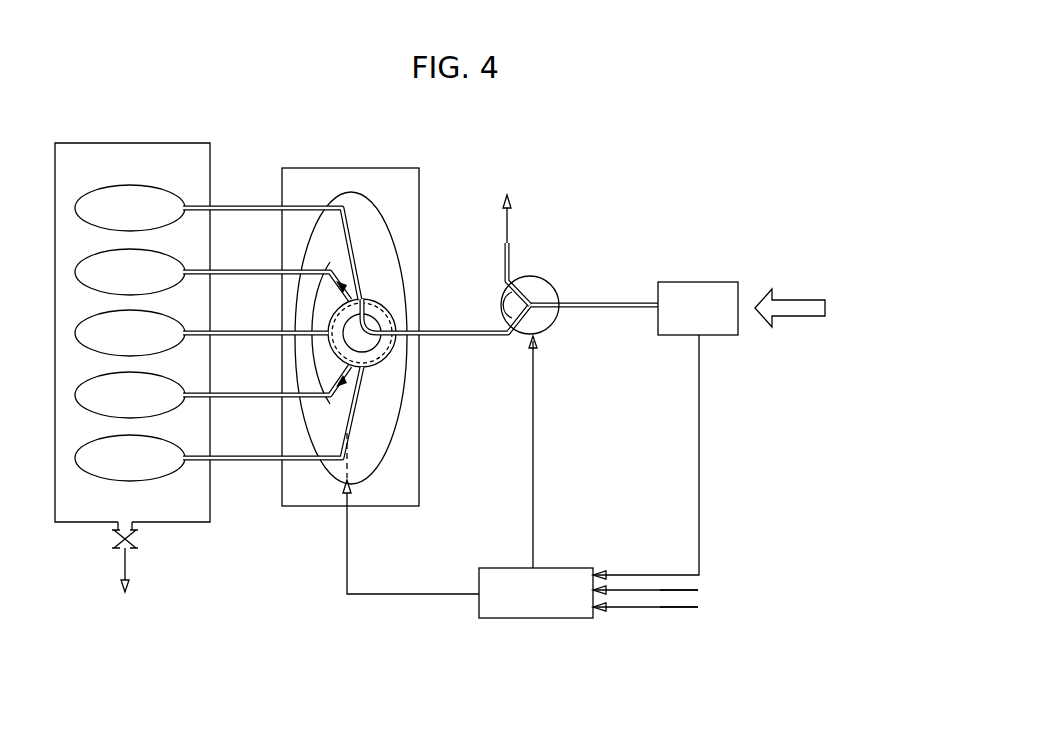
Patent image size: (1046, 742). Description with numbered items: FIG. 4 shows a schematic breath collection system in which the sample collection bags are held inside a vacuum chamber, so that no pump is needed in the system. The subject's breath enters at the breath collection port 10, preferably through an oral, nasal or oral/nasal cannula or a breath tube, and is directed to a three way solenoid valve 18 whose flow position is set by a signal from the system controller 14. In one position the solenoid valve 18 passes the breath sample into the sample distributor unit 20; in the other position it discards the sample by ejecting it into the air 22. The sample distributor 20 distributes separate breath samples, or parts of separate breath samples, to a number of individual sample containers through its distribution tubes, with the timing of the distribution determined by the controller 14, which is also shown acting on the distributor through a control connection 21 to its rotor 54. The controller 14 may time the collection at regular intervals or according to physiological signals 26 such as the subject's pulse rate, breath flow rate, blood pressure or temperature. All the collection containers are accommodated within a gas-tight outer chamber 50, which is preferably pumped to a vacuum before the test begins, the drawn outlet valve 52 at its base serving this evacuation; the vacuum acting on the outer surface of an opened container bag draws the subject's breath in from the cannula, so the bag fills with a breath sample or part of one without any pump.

The breath collection port 10 is at (746, 300).
The system controller 14 is at (567, 568).
The three way solenoid valve 18 is at (548, 285).
The sample distributor unit 20 is at (361, 168).
The rotor control line 21 is at (399, 594).
The air 22 is at (509, 222).
The physiological signals 26 is at (700, 603).
The gas-tight outer chamber 50 is at (163, 142).
The drain valve 52 is at (128, 550).
The rotor 54 is at (380, 462).